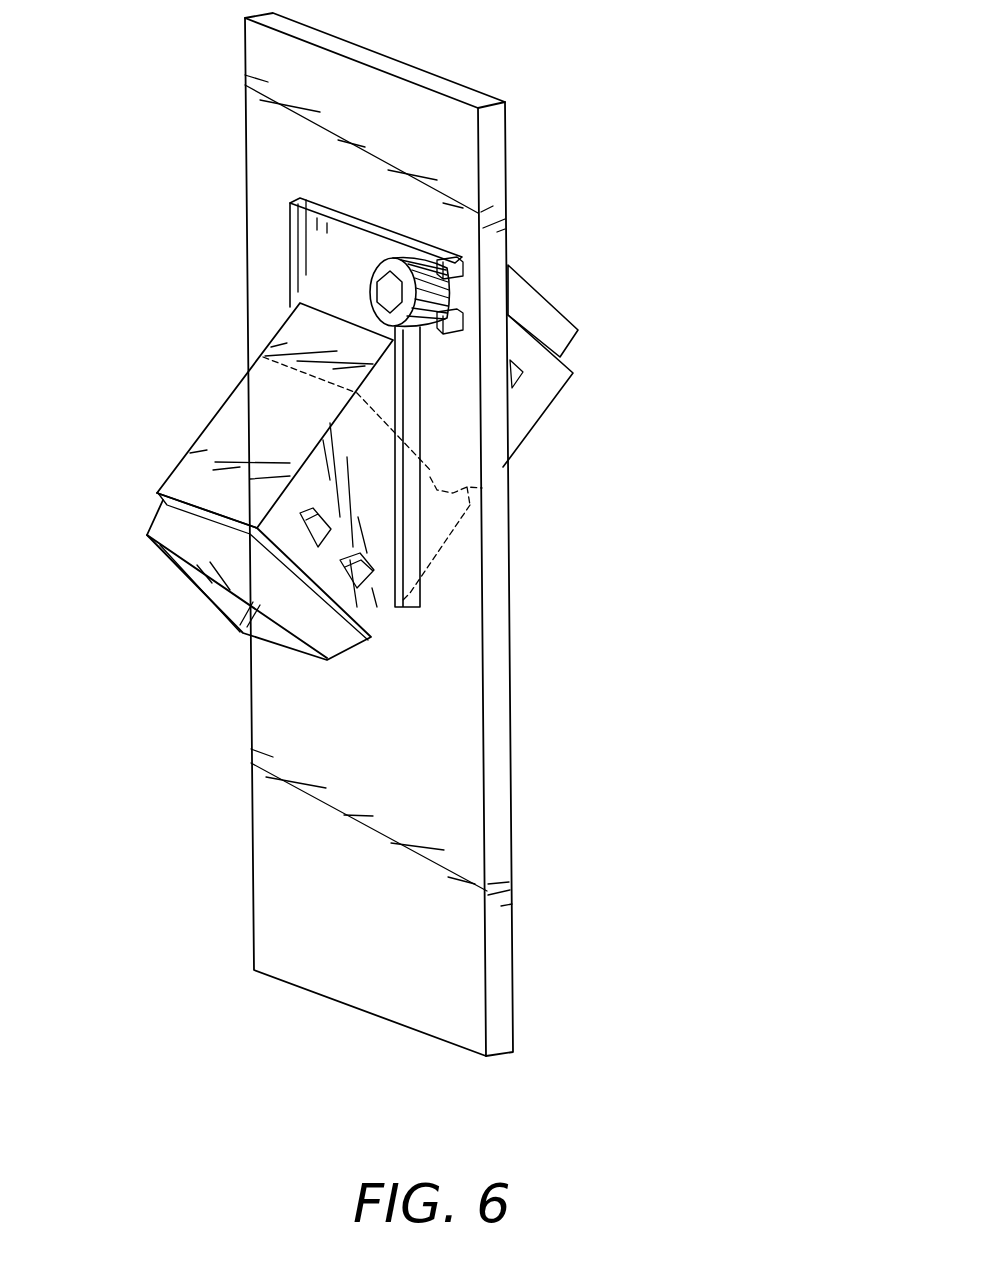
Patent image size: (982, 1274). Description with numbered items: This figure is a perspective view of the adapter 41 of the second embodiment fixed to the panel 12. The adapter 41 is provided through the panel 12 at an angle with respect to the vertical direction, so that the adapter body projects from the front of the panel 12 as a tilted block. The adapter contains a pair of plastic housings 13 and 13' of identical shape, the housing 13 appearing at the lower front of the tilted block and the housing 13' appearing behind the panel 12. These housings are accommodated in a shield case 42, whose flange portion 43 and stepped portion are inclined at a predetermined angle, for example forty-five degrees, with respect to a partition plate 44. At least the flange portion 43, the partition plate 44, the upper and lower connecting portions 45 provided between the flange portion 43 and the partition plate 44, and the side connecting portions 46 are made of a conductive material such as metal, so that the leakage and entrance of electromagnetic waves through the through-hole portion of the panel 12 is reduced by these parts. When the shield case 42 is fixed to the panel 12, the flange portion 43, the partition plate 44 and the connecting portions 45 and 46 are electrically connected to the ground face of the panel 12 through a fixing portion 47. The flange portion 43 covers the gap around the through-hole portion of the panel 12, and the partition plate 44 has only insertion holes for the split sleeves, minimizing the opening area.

The panel 12 is at (432, 663).
The housing 13 is at (187, 557).
The housing 13' is at (590, 306).
The adapter 41 is at (575, 395).
The shield case 42 is at (207, 428).
The flange portion 43 is at (393, 530).
The partition plate 44 is at (482, 488).
The upper and lower connecting portions 45 is at (310, 338).
The side connecting portions 46 is at (380, 393).
The fixing portion 47 is at (330, 272).